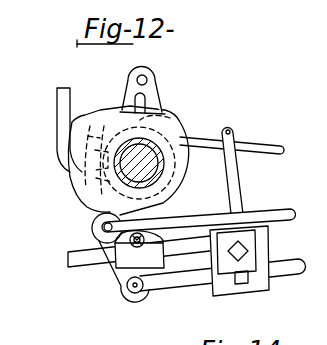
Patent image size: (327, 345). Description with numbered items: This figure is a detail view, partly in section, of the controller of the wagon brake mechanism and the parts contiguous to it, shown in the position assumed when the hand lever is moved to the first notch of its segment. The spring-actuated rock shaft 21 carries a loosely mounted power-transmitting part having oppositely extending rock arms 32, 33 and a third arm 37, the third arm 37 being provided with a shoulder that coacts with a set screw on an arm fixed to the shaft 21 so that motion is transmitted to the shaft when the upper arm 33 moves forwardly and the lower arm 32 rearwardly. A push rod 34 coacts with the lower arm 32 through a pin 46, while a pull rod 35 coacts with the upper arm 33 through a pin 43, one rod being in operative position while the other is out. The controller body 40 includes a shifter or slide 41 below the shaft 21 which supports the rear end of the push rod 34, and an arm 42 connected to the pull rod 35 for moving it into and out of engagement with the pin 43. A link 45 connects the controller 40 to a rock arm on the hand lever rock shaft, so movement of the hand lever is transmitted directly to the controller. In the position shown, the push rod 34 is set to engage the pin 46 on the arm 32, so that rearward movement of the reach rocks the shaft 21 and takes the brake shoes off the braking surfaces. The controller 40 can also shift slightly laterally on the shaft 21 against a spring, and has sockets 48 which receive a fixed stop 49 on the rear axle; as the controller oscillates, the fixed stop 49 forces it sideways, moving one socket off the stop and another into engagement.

The rock shaft 21 is at (165, 150).
The rock arm 32 is at (127, 297).
The rock arm 33 is at (152, 112).
The push rod 34 is at (185, 285).
The pull rod 35 is at (261, 143).
The third arm 37 is at (128, 84).
The gear housing 40 is at (70, 179).
The shifter 41 is at (228, 288).
The arm 42 is at (241, 180).
The pin 43 is at (148, 98).
The link 45 is at (197, 221).
The pin 46 is at (134, 294).
The sockets 48 is at (75, 211).
The fixed stop 49 is at (57, 166).